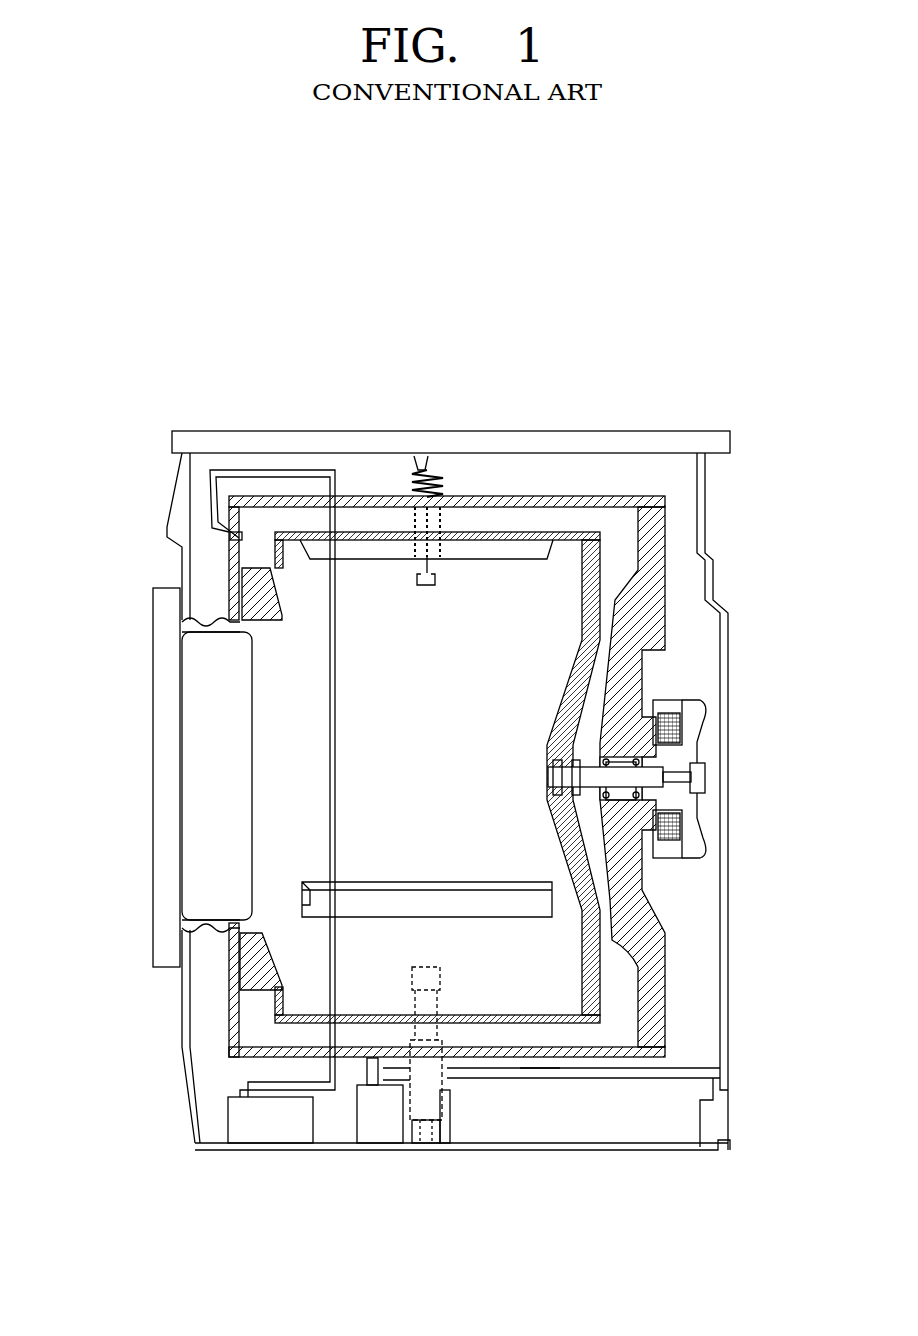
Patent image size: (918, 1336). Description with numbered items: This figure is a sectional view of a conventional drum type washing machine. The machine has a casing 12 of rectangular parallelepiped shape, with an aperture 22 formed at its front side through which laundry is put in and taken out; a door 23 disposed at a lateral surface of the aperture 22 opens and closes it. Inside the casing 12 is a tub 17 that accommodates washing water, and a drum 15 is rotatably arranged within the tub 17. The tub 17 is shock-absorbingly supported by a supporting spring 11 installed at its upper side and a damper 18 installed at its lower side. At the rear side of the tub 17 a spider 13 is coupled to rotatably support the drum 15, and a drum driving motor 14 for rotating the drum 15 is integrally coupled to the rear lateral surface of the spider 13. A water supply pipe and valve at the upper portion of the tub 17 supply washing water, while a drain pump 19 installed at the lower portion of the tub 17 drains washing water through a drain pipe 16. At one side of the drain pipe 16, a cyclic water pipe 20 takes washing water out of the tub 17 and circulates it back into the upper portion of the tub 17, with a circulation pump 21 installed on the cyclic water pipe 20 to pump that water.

The supporting spring 11 is at (417, 453).
The casing 12 is at (517, 431).
The spider 13 is at (657, 591).
The drum driving motor 14 is at (680, 700).
The drum 15 is at (594, 990).
The drain pipe 16 is at (603, 1080).
The tub 17 is at (537, 1060).
The damper 18 is at (447, 1125).
The drain pump 19 is at (385, 1125).
The cyclic water pipe 20 is at (337, 990).
The circulation pump 21 is at (272, 1127).
The aperture 22 is at (195, 924).
The door 23 is at (153, 777).